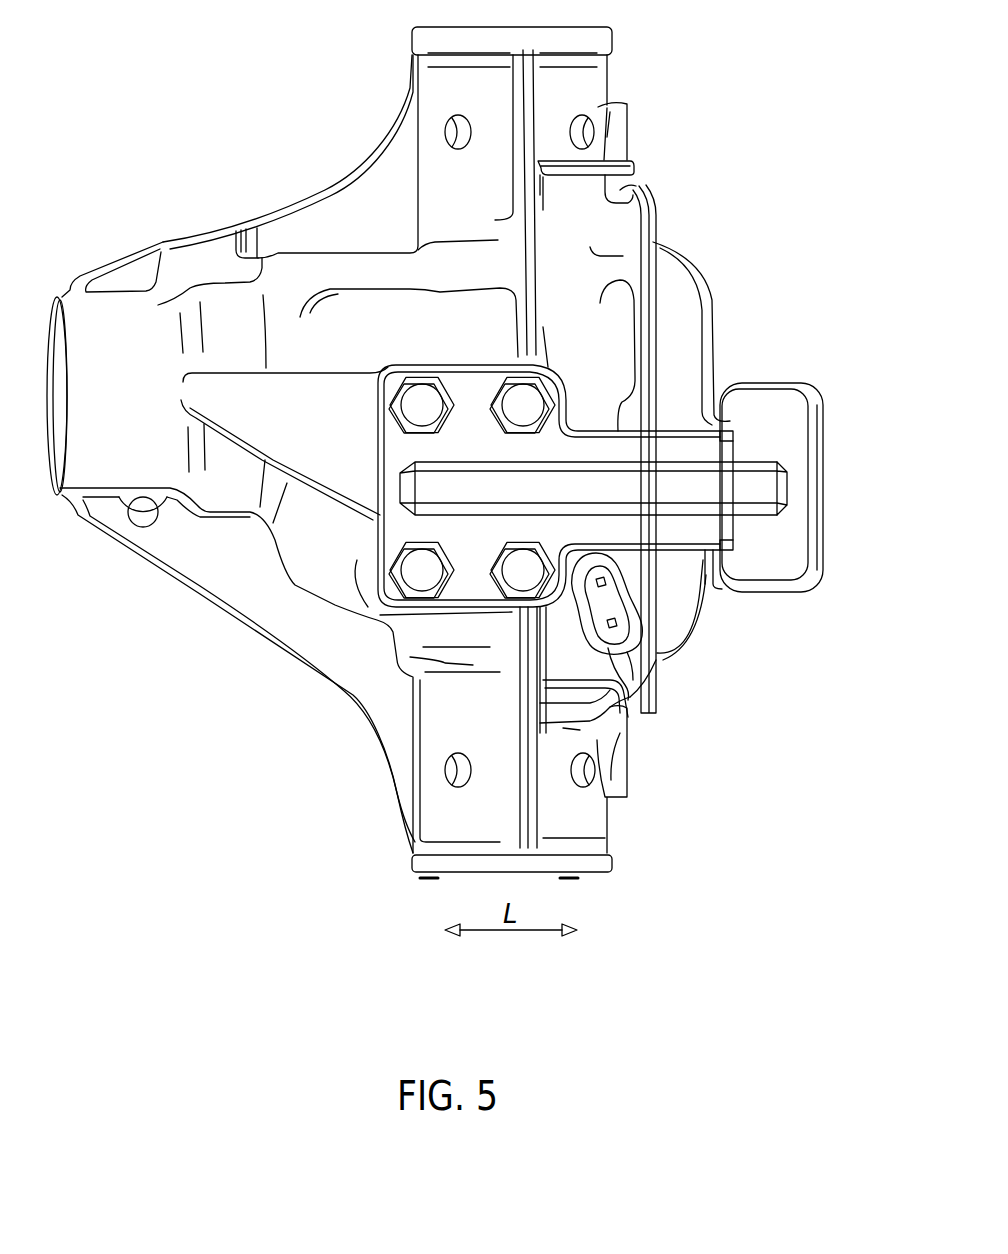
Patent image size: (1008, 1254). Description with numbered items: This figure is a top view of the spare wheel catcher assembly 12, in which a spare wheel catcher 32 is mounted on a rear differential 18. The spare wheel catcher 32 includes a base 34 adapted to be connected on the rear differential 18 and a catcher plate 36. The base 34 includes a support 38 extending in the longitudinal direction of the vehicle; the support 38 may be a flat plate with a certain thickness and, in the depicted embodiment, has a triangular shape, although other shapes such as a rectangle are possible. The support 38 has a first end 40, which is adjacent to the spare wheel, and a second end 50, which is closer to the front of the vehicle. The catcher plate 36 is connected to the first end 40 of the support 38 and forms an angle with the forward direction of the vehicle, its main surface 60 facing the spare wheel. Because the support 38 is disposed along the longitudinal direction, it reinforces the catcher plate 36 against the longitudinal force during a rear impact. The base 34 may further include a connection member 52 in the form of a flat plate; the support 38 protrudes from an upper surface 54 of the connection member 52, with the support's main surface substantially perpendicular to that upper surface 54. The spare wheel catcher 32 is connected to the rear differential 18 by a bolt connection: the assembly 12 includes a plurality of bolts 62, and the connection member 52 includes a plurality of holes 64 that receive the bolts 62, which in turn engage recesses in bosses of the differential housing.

The spare wheel catcher assembly 12 is at (730, 173).
The rear differential 18 is at (634, 156).
The spare wheel catcher 32 is at (706, 568).
The base 34 is at (372, 442).
The catcher plate 36 is at (821, 393).
The support 38 is at (764, 487).
The first end 40 is at (750, 507).
The second end 50 is at (437, 487).
The connection member 52 is at (521, 608).
The upper surface 54 is at (427, 528).
The main surface 60 is at (818, 463).
The bolts 62 is at (446, 556).
The holes 64 is at (405, 540).